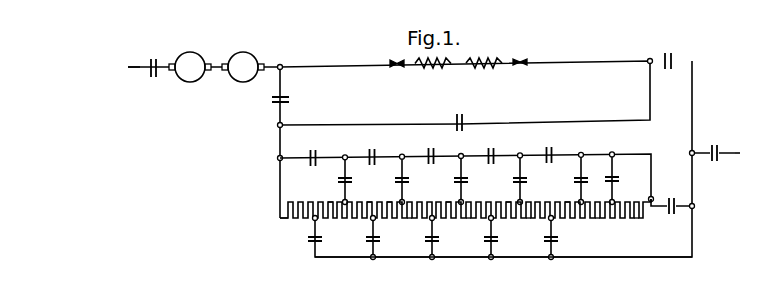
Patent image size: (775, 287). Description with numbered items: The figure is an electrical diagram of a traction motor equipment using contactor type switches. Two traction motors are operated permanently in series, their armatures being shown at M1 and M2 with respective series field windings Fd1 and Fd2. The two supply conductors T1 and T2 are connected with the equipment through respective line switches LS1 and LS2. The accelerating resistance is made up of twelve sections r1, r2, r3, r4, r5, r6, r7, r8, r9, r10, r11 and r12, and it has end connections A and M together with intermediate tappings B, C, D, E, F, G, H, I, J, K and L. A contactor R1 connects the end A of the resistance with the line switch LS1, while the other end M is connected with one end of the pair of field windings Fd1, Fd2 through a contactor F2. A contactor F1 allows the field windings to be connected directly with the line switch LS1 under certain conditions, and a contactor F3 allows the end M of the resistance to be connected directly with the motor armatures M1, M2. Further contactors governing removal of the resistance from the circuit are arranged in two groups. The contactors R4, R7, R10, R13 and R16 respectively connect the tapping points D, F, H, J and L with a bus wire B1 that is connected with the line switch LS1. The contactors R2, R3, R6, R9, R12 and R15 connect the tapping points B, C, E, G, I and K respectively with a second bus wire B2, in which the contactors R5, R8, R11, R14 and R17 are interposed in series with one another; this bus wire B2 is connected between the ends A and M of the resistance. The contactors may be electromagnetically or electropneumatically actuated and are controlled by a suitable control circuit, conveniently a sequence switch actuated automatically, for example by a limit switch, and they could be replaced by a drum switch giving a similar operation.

The supply conductor T2 is at (137, 63).
The line switch LS2 is at (153, 78).
The motor armature M2 is at (190, 67).
The motor armature M1 is at (243, 67).
The contactor F3 is at (272, 100).
The series field winding Fd2 is at (437, 69).
The series field winding Fd1 is at (486, 69).
The contactor F1 is at (669, 70).
The contactor F2 is at (459, 119).
The second bus wire B2 is at (660, 156).
The contactor R17 is at (315, 144).
The contactor R14 is at (371, 148).
The contactor R11 is at (430, 148).
The contactor R8 is at (490, 148).
The contactor R5 is at (549, 144).
The contactor R15 is at (337, 180).
The contactor R12 is at (394, 180).
The contactor R9 is at (453, 180).
The contactor R6 is at (512, 180).
The contactor R3 is at (573, 180).
The contactor R2 is at (620, 177).
The tapping point K is at (341, 194).
The tapping point I is at (403, 194).
The tapping point G is at (465, 194).
The tapping point E is at (524, 194).
The tapping point C is at (585, 194).
The tapping point B is at (616, 194).
The end connection of resistance A is at (653, 197).
The end connection of resistance M is at (280, 213).
The resistance section r12 is at (281, 220).
The resistance section r11 is at (330, 201).
The resistance section r10 is at (371, 201).
The resistance section r9 is at (395, 201).
The resistance section r8 is at (408, 218).
The resistance section r7 is at (452, 201).
The resistance section r6 is at (467, 218).
The resistance section r5 is at (509, 201).
The resistance section r4 is at (526, 218).
The resistance section r3 is at (569, 201).
The resistance section r2 is at (596, 218).
The resistance section r1 is at (640, 216).
The tapping point L is at (317, 220).
The tapping point J is at (375, 220).
The tapping point H is at (434, 220).
The tapping point F is at (493, 220).
The tapping point D is at (553, 220).
The contactor R16 is at (307, 239).
The contactor R13 is at (365, 239).
The contactor R10 is at (424, 239).
The contactor R7 is at (483, 239).
The contactor R4 is at (543, 239).
The bus wire B1 is at (621, 258).
The contactor R1 is at (671, 215).
The line switch LS1 is at (716, 162).
The supply conductor T1 is at (732, 152).